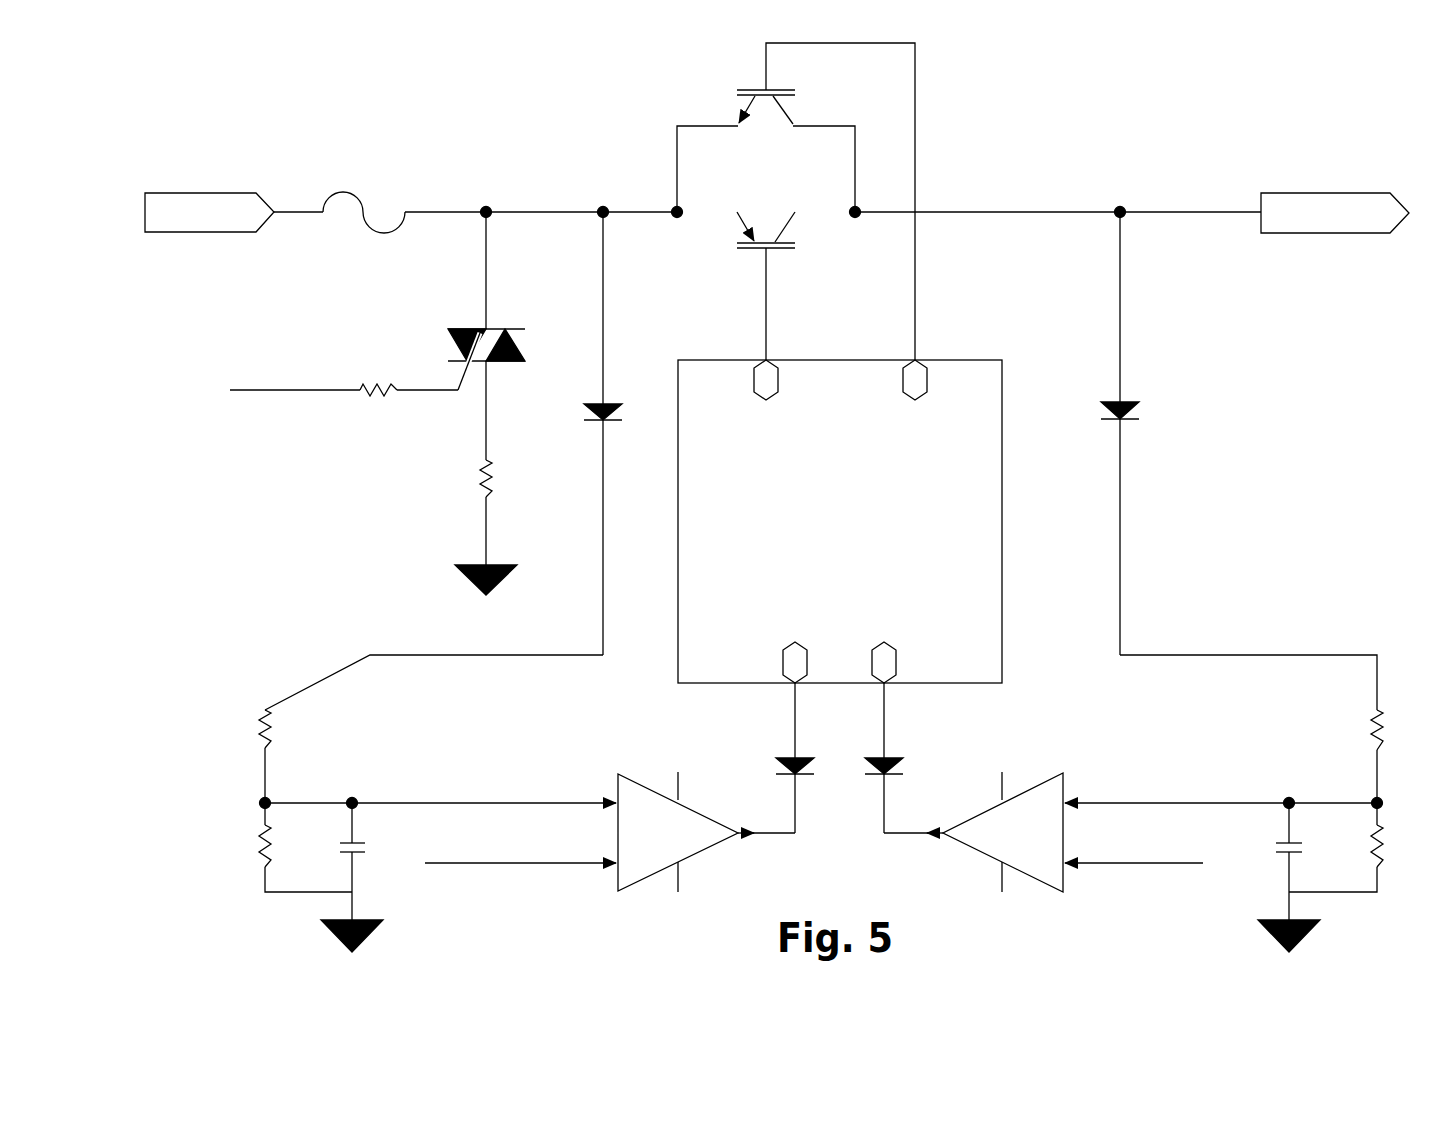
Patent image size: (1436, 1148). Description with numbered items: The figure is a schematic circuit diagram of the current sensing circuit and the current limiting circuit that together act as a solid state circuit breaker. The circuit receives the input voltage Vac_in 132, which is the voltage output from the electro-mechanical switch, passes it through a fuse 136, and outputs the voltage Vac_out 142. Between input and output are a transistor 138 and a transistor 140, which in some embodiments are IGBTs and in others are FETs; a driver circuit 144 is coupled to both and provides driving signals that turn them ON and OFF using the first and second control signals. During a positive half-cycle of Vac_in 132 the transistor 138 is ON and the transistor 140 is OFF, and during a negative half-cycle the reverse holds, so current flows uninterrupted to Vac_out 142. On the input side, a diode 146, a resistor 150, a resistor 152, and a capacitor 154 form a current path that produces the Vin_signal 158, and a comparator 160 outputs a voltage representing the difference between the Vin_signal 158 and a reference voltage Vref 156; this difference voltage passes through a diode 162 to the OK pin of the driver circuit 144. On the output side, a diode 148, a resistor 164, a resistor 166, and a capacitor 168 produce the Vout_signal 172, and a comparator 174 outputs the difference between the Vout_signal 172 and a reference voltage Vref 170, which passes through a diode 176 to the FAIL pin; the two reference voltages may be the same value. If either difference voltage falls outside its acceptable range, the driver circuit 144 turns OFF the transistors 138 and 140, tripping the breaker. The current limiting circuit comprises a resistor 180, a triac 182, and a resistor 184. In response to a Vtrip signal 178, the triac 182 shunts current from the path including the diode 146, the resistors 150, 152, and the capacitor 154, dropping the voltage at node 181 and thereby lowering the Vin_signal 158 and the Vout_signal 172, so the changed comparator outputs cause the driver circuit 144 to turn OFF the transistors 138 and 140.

The input voltage Vac_in 132 is at (200, 193).
The fuse 136 is at (364, 172).
The node 181 is at (486, 212).
The triac 182 is at (531, 289).
The Vtrip signal 178 is at (266, 349).
The resistor 180 is at (378, 349).
The resistor 184 is at (524, 491).
The diode 146 is at (618, 387).
The transistor 138 is at (785, 81).
The transistor 140 is at (785, 196).
The driver circuit 144 is at (970, 360).
The output voltage Vac_out 142 is at (1323, 193).
The diode 148 is at (1136, 392).
The resistor 150 is at (237, 696).
The resistor 152 is at (237, 821).
The capacitor 154 is at (372, 867).
The Vin_signal 158 is at (482, 769).
The reference voltage Vref 156 is at (485, 871).
The comparator 160 is at (700, 850).
The diode 162 is at (764, 749).
The diode 176 is at (939, 749).
The comparator 174 is at (1025, 878).
The Vout_signal 172 is at (1177, 767).
The capacitor 168 is at (1270, 847).
The reference voltage Vref 170 is at (1177, 877).
The resistor 164 is at (1396, 699).
The resistor 166 is at (1396, 867).